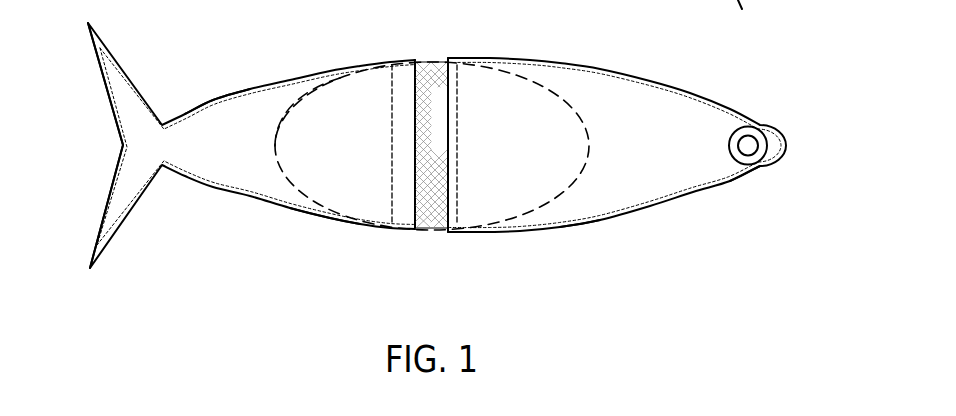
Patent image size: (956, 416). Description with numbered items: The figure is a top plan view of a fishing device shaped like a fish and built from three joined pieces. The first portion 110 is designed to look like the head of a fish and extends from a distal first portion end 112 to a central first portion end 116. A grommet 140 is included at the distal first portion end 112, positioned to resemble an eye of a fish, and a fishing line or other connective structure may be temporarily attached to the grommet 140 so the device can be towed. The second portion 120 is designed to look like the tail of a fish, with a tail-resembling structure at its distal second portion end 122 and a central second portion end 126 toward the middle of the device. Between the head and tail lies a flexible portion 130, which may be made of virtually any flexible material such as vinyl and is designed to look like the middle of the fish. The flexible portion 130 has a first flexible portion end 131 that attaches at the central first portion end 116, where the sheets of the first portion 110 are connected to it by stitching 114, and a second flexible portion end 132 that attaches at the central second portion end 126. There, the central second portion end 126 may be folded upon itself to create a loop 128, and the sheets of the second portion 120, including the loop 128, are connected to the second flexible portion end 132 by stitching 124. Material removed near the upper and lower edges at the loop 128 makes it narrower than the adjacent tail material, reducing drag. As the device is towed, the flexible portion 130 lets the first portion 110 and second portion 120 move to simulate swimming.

The first portion 110 is at (640, 100).
The distal first portion end 112 is at (745, 168).
The stitching 114 is at (458, 148).
The central first portion end 116 is at (574, 207).
The second portion 120 is at (223, 120).
The distal second portion end 122 is at (118, 82).
The stitching 124 is at (390, 141).
The central second portion end 126 is at (337, 216).
The loop 128 is at (405, 218).
The flexible portion 130 is at (431, 70).
The first flexible portion end 131 is at (527, 78).
The second flexible portion end 132 is at (332, 80).
The grommet 140 is at (752, 137).